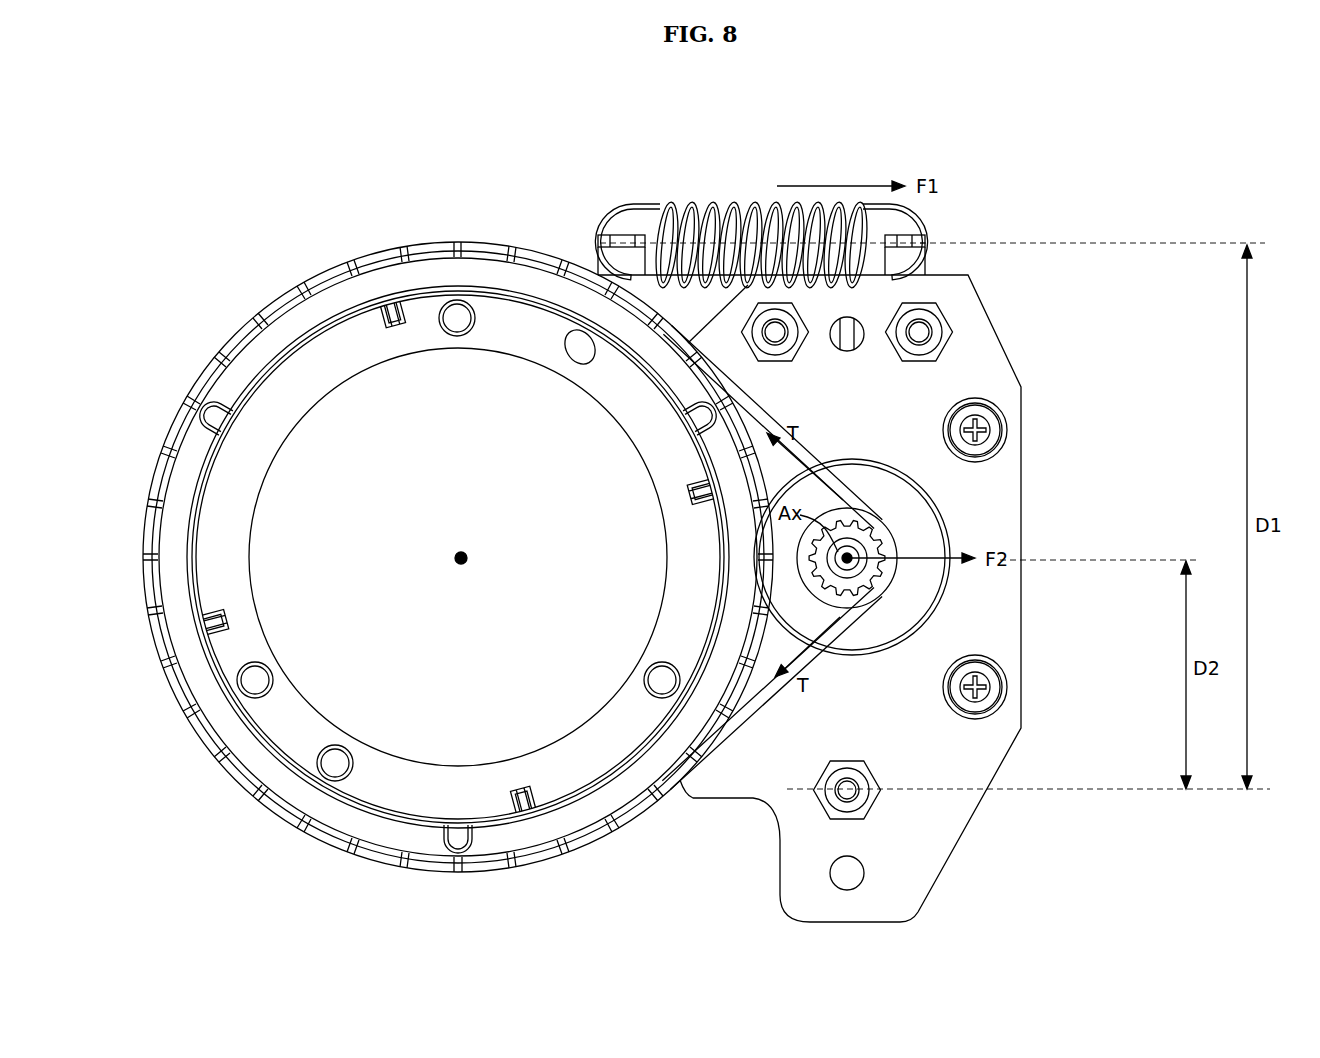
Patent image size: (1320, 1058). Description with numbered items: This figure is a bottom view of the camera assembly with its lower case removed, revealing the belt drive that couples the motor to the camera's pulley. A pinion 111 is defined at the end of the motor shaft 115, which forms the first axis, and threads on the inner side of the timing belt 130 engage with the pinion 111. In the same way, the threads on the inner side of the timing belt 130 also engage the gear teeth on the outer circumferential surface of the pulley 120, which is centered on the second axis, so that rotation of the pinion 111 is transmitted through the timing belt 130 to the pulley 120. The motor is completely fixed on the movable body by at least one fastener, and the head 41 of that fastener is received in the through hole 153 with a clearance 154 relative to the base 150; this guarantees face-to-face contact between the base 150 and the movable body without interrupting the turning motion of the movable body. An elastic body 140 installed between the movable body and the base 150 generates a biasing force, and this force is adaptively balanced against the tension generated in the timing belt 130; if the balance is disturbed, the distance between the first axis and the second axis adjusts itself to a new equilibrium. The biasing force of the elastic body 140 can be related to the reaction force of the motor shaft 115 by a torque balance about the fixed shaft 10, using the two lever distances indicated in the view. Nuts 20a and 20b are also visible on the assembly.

The fixed shaft 10 is at (863, 800).
The first nut 20a is at (938, 333).
The second nut 20b is at (783, 338).
The head 41 is at (1003, 429).
The pinion 111 is at (877, 540).
The motor shaft 115 is at (857, 550).
The pulley 120 is at (273, 332).
The timing belt 130 is at (873, 600).
The elastic body 140 is at (740, 205).
The base 150 is at (1003, 613).
The through hole 153 is at (1003, 452).
The clearance 154 is at (1007, 415).